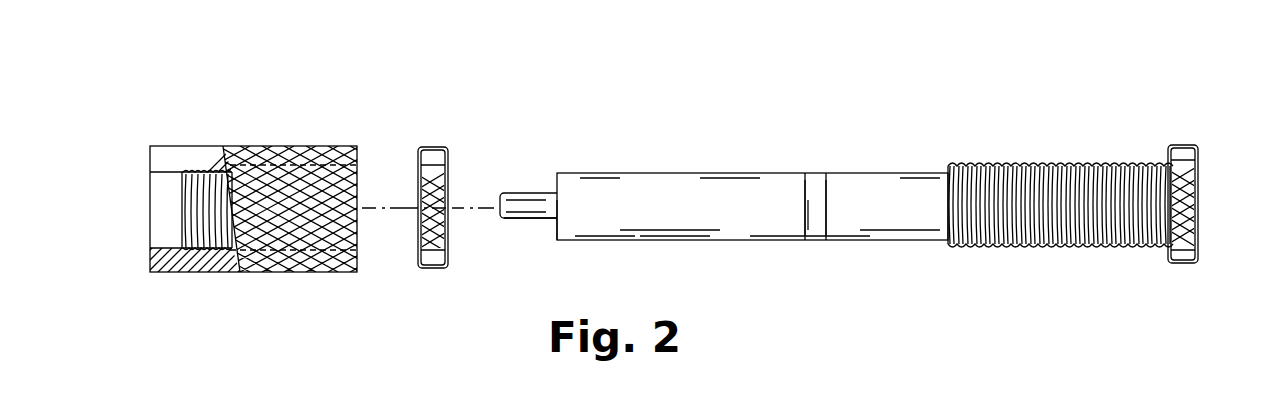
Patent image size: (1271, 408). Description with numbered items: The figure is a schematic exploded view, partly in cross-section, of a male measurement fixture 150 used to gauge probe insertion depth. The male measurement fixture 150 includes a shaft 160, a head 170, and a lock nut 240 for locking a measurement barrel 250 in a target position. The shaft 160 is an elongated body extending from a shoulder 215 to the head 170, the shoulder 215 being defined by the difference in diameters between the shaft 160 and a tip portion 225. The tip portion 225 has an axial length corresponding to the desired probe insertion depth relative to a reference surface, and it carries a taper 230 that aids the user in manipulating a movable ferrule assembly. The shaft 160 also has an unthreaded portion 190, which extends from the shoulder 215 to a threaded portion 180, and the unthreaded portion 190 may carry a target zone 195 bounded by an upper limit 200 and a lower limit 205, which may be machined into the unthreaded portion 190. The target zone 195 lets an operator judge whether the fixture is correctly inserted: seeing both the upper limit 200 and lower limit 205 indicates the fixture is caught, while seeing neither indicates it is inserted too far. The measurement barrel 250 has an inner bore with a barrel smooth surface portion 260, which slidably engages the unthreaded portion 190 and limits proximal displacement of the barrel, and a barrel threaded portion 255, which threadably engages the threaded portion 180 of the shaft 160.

The male measurement fixture 150 is at (713, 114).
The shaft 160 is at (1096, 178).
The head 170 is at (1184, 264).
The threaded portion 180 is at (993, 160).
The unthreaded portion 190 is at (816, 166).
The target zone 195 is at (816, 246).
The upper limit 200 is at (827, 241).
The lower limit 205 is at (805, 241).
The shoulder 215 is at (556, 242).
The tip portion 225 is at (512, 223).
The taper 230 is at (499, 192).
The lock nut 240 is at (433, 146).
The measurement barrel 250 is at (241, 142).
The barrel threaded portion 255 is at (212, 240).
The barrel smooth surface portion 260 is at (166, 247).